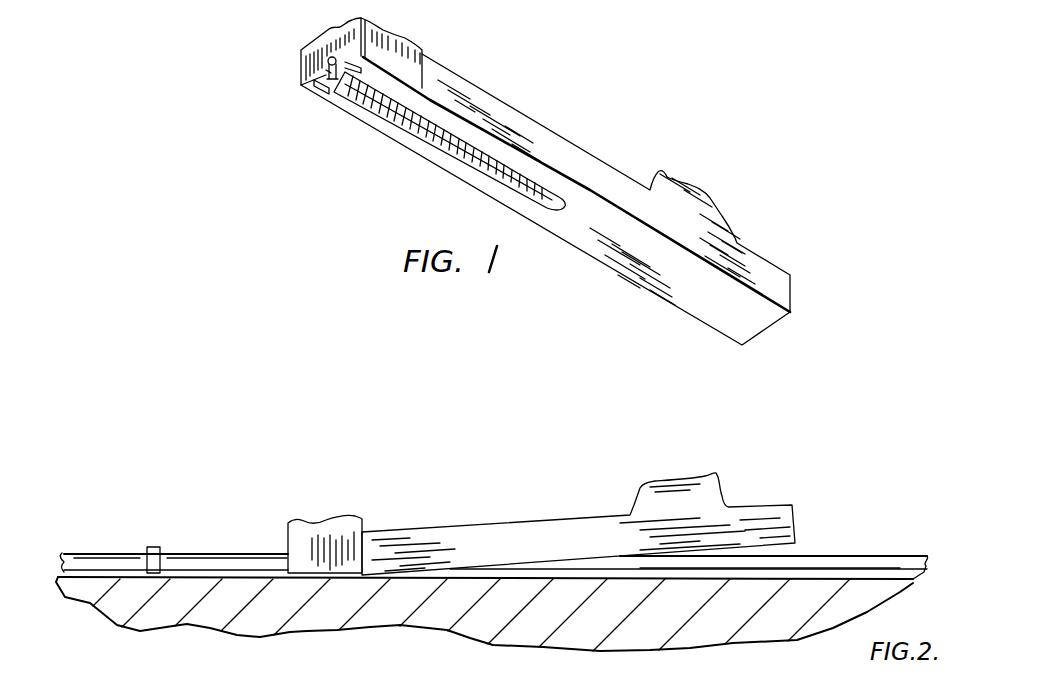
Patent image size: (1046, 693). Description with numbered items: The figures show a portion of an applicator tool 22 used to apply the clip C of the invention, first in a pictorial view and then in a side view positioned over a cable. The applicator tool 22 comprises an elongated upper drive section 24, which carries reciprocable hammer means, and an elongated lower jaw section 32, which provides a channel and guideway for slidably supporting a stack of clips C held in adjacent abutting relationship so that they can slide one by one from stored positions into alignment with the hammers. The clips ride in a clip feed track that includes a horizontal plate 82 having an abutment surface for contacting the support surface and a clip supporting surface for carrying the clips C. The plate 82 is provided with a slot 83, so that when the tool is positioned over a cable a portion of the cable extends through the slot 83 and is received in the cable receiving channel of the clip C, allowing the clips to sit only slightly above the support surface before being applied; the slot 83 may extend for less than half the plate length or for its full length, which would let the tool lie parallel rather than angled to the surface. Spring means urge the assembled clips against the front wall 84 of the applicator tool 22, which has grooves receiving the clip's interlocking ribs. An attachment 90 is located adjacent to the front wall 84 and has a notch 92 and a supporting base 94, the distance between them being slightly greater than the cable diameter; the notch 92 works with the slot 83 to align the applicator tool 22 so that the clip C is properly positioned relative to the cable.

In FIG. 1, the applicator tool 22 is at (407, 188).
In FIG. 1, the elongated upper drive section 24 is at (263, 52).
In FIG. 1, the elongated lower jaw section 32 is at (585, 167).
In FIG. 2, the elongated lower jaw section 32 is at (520, 533).
In FIG. 1, the horizontal plate 82 is at (593, 243).
In FIG. 2, the horizontal plate 82 is at (493, 566).
In FIG. 1, the slot 83 is at (400, 133).
In FIG. 1, the front wall 84 is at (329, 59).
In FIG. 2, the front wall 84 is at (325, 544).
In FIG. 1, the attachment 90 is at (391, 53).
In FIG. 1, the notch 92 is at (327, 70).
In FIG. 1, the supporting base 94 is at (362, 42).
In FIG. 2, the clip C is at (168, 536).